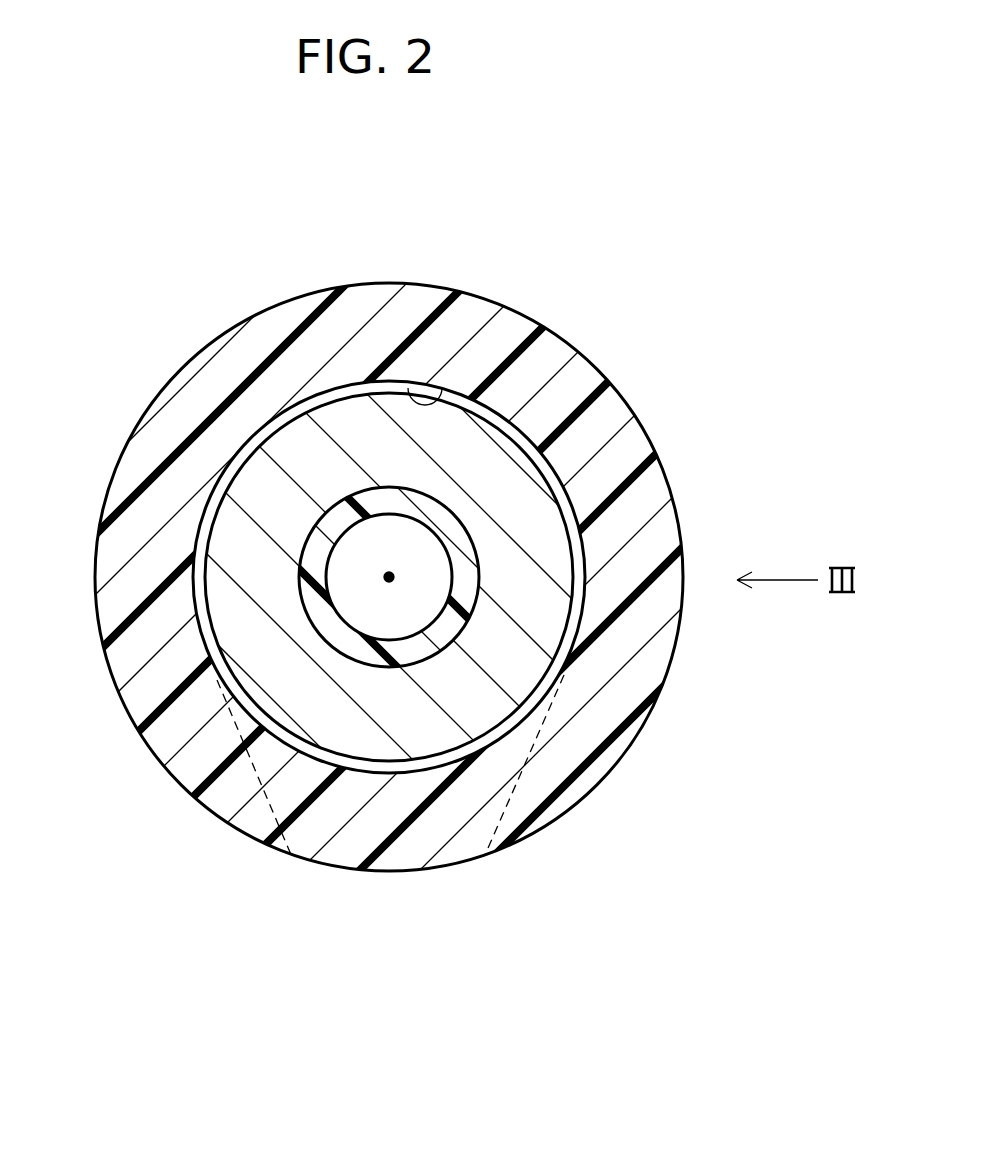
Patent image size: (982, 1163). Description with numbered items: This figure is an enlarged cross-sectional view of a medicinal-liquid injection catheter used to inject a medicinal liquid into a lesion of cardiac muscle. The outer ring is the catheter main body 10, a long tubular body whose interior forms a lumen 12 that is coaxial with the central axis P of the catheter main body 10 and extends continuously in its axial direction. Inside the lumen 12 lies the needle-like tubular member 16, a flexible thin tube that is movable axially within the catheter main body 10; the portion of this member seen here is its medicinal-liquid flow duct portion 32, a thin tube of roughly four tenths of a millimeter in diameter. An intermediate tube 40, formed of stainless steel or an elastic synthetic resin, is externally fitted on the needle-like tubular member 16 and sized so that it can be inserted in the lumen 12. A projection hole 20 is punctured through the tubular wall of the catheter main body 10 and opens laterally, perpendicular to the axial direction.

The catheter main body 10 is at (273, 289).
The lumen 12 is at (447, 389).
The needle-like tubular member 16 is at (330, 630).
The medicinal-liquid flow duct portion 32 is at (284, 699).
The projection hole 20 is at (300, 857).
The intermediate tube 40 is at (557, 558).
The central axis P is at (388, 577).